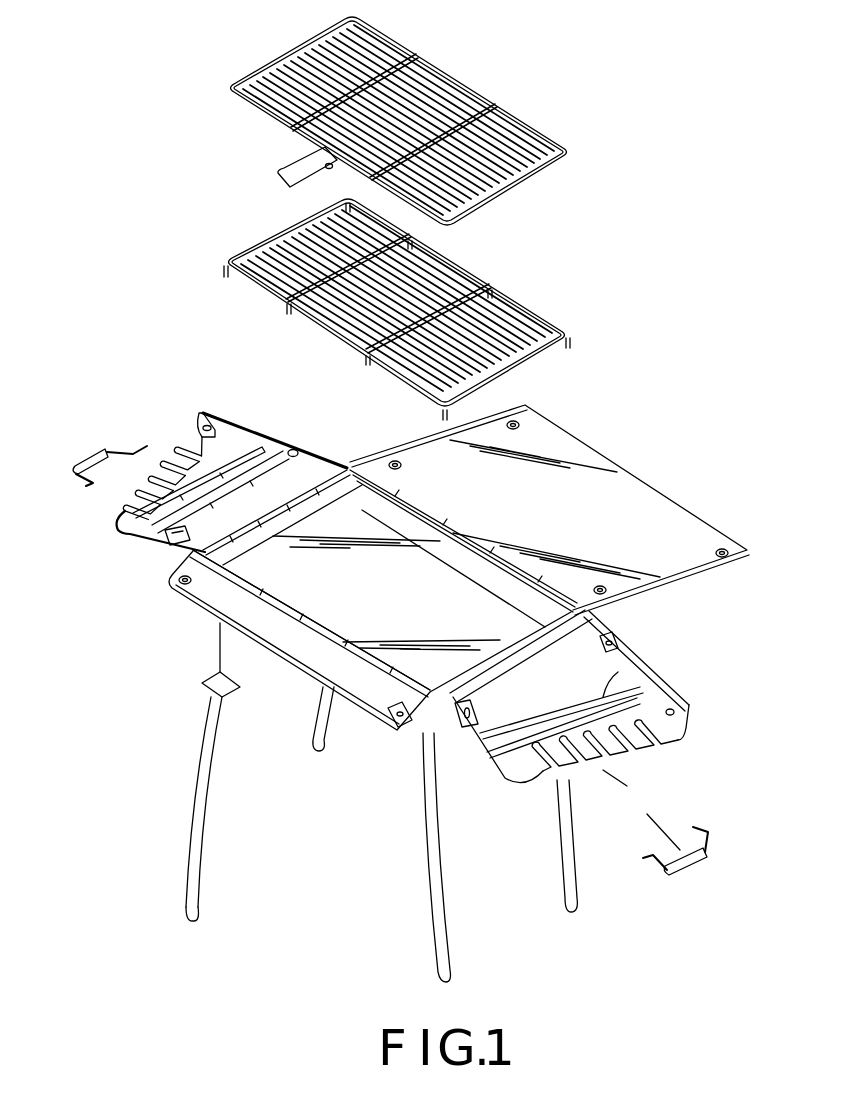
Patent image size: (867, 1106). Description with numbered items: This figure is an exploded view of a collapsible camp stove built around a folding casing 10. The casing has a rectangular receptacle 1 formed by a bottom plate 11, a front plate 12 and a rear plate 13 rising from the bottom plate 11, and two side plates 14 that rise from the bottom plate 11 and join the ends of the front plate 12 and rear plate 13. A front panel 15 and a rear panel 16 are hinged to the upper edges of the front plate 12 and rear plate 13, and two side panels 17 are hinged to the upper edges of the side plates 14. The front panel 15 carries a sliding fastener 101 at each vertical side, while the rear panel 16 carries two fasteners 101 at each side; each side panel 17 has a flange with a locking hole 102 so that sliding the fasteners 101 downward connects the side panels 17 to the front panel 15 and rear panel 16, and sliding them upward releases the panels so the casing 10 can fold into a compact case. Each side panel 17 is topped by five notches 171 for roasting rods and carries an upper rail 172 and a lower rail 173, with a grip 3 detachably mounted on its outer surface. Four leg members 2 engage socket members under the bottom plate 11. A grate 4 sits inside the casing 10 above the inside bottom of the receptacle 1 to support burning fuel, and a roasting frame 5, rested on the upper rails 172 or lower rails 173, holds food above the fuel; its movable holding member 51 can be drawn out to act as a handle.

The rectangular receptacle 1 is at (459, 613).
The leg members 2 is at (208, 880).
The grip 3 is at (90, 455).
The grate 4 is at (530, 302).
The roasting frame 5 is at (547, 125).
The holding member 51 is at (290, 186).
The folding casing 10 is at (650, 440).
The bottom plate 11 is at (325, 523).
The front plate 12 is at (415, 738).
The rear plate 13 is at (360, 493).
The side plates 14 is at (267, 530).
The front panel 15 is at (300, 672).
The rear panel 16 is at (567, 478).
The side panels 17 is at (423, 604).
The fastener 101 is at (523, 417).
The locking hole 102 is at (207, 412).
The notches 171 is at (641, 810).
The upper rail 172 is at (615, 670).
The lower rail 173 is at (643, 658).